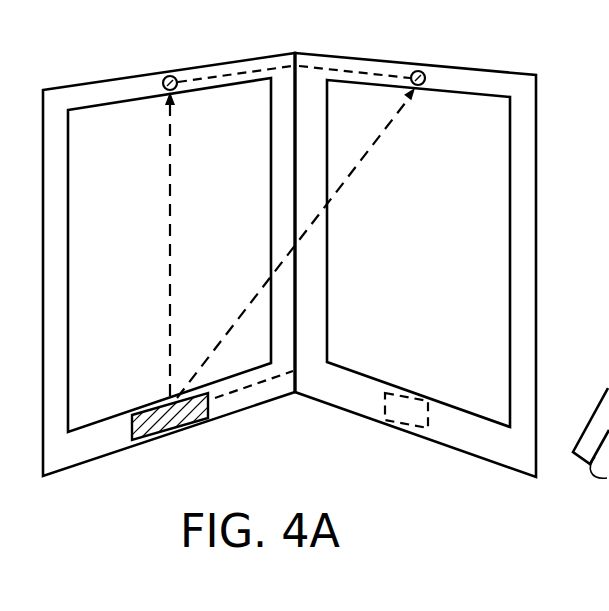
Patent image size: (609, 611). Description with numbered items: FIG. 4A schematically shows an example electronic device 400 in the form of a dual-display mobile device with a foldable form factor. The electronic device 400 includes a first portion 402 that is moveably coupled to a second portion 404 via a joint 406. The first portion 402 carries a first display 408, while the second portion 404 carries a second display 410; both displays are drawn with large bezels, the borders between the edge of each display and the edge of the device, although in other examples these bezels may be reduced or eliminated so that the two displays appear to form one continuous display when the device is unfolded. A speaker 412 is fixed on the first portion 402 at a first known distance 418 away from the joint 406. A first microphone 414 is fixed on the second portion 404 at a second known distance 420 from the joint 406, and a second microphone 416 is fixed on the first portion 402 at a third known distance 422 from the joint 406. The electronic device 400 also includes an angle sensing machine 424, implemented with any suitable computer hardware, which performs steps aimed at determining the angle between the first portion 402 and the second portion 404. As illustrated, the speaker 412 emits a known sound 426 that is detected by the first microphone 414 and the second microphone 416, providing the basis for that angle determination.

The electronic device 400 is at (142, 38).
The first portion 402 is at (214, 65).
The second portion 404 is at (497, 72).
The joint 406 is at (300, 34).
The first display 408 is at (113, 103).
The second display 410 is at (510, 236).
The speaker 412 is at (166, 427).
The first microphone 414 is at (420, 71).
The second microphone 416 is at (166, 101).
The first known distance 418 is at (238, 393).
The second known distance 420 is at (343, 70).
The third known distance 422 is at (212, 79).
The angle sensing machine 424 is at (424, 428).
The known sound 426 is at (170, 326).